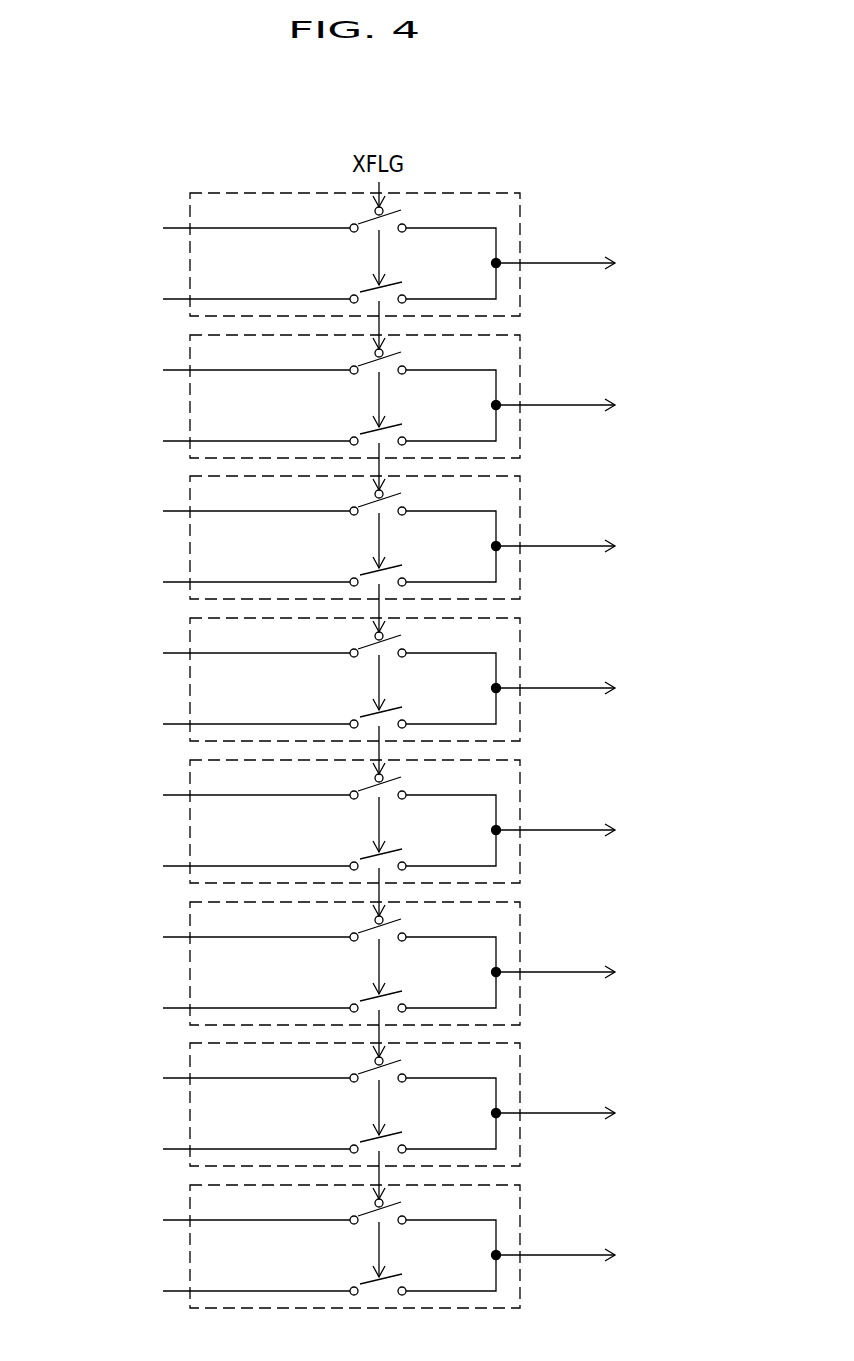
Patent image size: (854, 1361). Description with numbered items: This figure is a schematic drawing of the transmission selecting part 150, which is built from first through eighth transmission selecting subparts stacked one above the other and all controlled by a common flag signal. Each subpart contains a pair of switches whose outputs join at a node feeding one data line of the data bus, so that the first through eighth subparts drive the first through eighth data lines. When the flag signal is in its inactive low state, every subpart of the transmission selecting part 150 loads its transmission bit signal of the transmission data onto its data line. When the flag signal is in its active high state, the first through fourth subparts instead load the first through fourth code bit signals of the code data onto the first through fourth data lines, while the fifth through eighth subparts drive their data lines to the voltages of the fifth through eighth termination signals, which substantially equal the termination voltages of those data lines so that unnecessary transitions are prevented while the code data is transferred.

The transmission selecting part 150 is at (625, 165).